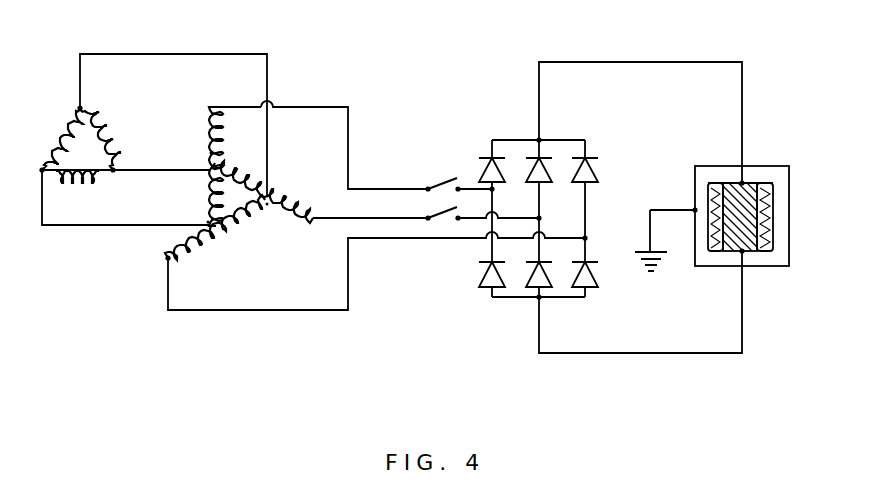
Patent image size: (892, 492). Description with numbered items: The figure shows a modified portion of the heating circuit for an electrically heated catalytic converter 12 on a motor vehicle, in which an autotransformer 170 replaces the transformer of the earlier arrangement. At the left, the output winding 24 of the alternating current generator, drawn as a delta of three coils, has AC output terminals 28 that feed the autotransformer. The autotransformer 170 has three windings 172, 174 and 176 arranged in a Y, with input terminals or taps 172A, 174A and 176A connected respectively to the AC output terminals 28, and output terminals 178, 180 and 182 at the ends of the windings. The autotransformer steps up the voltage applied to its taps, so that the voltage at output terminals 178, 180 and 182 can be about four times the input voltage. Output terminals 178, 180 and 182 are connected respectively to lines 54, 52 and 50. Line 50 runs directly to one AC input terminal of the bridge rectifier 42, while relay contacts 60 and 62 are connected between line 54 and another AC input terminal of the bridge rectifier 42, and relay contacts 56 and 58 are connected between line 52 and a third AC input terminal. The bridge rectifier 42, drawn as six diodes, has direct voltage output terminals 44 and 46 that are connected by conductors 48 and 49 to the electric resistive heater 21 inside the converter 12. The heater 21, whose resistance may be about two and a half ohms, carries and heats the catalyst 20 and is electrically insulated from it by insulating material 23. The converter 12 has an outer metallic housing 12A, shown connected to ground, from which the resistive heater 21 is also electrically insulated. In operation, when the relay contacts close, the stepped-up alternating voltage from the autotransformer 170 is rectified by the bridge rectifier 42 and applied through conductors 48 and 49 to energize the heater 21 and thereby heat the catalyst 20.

The electrically heated catalytic converter 12 is at (743, 204).
The metallic housing 12A is at (789, 232).
The catalyst 20 is at (712, 196).
The electric resistive heater 21 is at (731, 243).
The insulating material 23 is at (723, 183).
The output winding 24 is at (106, 134).
The AC output terminals 28 is at (42, 168).
The bridge rectifier 42 is at (588, 153).
The direct voltage output terminal 44 is at (537, 138).
The direct voltage output terminal 46 is at (548, 300).
The conductor 48 is at (688, 60).
The conductor 49 is at (688, 355).
The line 50 is at (324, 312).
The line 52 is at (375, 217).
The line 54 is at (298, 107).
The relay contact 56 is at (427, 221).
The relay contact 58 is at (457, 222).
The relay contact 60 is at (437, 185).
The relay contact 62 is at (462, 186).
The autotransformer 170 is at (228, 200).
The winding 172 is at (210, 131).
The input terminal 172A is at (210, 153).
The winding 174 is at (300, 205).
The input terminal 174A is at (267, 205).
The winding 176 is at (203, 243).
The input terminal 176A is at (207, 222).
The output terminal 178 is at (218, 105).
The output terminal 180 is at (316, 223).
The output terminal 182 is at (165, 259).